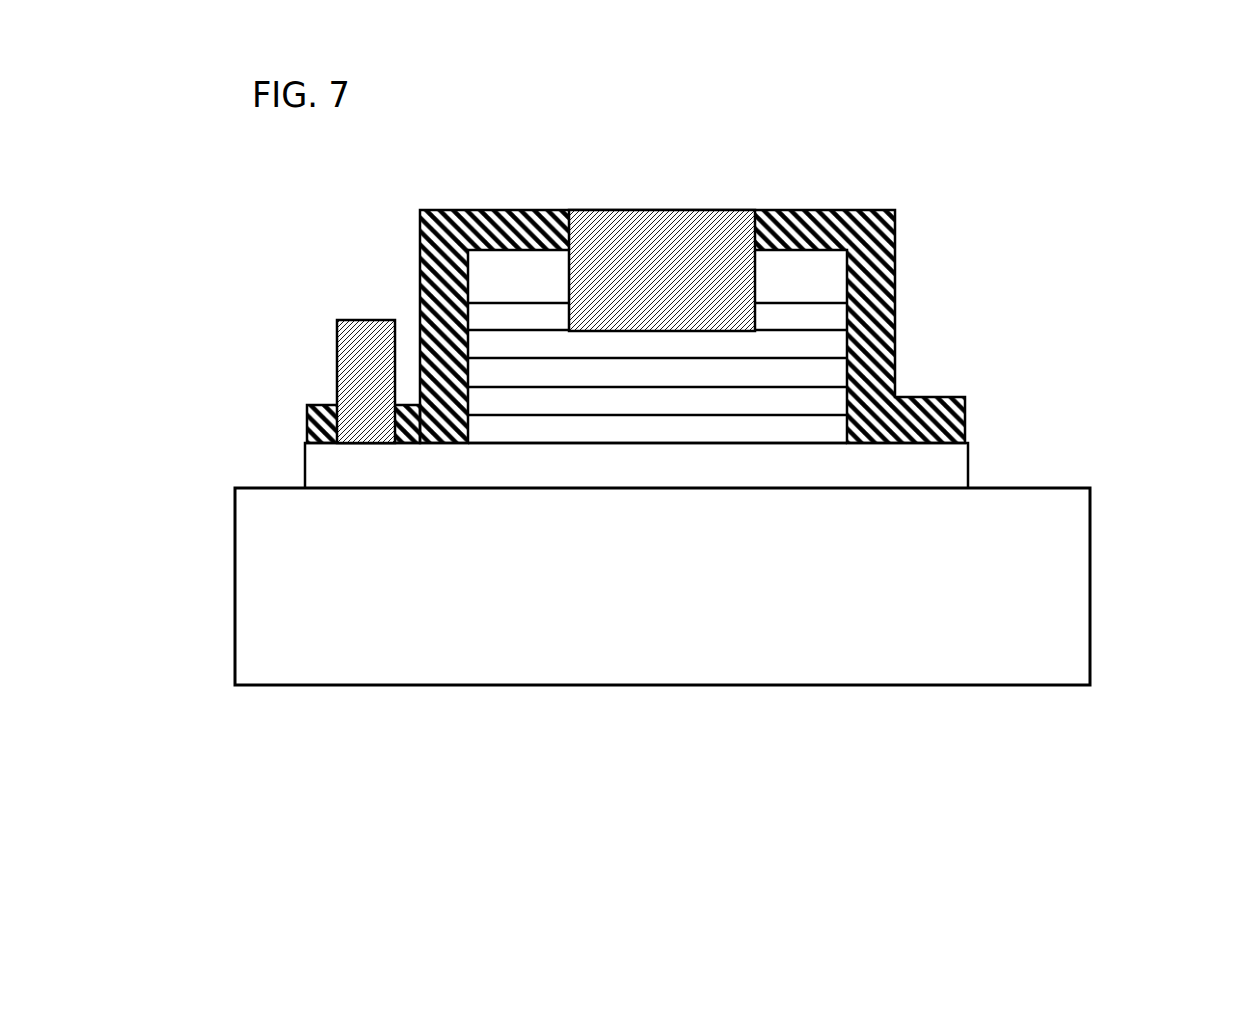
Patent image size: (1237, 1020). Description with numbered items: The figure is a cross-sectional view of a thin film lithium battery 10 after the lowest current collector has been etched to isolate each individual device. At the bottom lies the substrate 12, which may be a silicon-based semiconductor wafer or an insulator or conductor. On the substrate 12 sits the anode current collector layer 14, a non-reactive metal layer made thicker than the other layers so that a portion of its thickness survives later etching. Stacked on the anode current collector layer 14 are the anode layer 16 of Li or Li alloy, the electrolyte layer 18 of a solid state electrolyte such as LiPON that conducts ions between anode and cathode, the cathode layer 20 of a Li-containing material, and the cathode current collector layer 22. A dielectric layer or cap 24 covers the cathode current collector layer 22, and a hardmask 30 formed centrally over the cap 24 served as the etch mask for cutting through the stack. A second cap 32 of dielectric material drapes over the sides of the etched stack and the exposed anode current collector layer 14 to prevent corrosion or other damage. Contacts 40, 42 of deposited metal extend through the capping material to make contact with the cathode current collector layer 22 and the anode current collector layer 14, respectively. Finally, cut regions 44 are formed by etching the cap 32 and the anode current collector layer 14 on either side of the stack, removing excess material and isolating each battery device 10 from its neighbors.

The thin film lithium battery 10 is at (493, 136).
The substrate 12 is at (1015, 630).
The anode current collector layer 14 is at (937, 465).
The anode layer 16 is at (820, 430).
The electrolyte layer 18 is at (825, 402).
The cathode layer 20 is at (825, 375).
The cathode current collector layer 22 is at (822, 347).
The dielectric layer or cap 24 is at (837, 318).
The hardmask 30 is at (820, 270).
The second cap 32 is at (820, 218).
The contact 40 is at (668, 257).
The contact 42 is at (367, 357).
The cut regions 44 is at (266, 442).